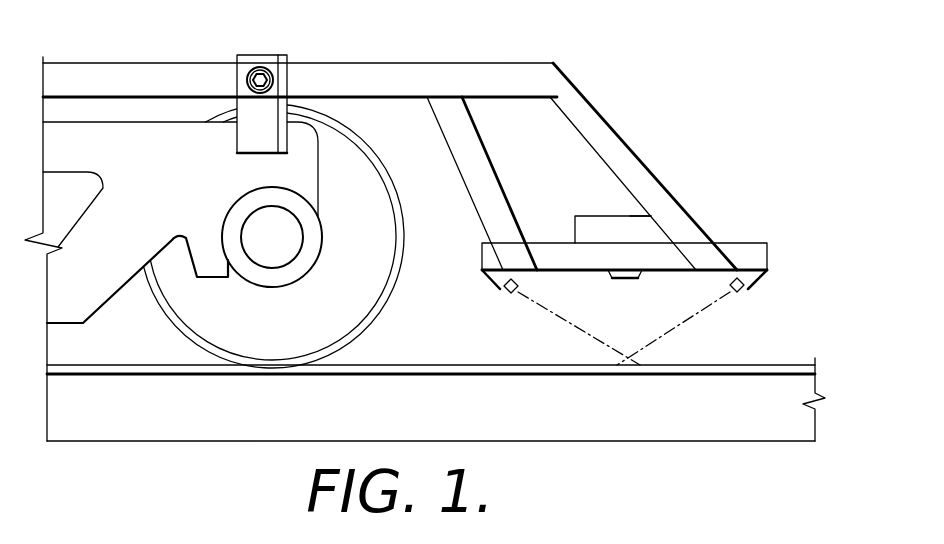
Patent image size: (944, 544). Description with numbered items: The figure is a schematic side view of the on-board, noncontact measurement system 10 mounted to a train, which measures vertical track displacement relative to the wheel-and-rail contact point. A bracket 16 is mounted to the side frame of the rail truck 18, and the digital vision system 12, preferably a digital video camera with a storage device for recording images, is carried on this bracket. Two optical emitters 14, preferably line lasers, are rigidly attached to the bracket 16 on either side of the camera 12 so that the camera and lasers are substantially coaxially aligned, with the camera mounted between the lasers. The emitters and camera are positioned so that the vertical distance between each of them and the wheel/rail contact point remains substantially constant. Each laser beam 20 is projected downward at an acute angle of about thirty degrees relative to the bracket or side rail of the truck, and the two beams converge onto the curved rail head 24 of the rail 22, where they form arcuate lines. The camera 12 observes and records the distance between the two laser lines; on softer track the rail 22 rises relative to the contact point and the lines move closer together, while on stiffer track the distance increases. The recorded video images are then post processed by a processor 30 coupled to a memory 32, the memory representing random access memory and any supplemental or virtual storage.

The measurement system 10 is at (768, 178).
The digital vision system 12 is at (622, 280).
The optical emitters 14 is at (499, 280).
The bracket 16 is at (557, 250).
The rail truck 18 is at (530, 70).
The laser beam 20 is at (570, 325).
The rail 22 is at (763, 430).
The rail head 24 is at (818, 366).
The processor 30 is at (652, 233).
The memory 32 is at (650, 213).